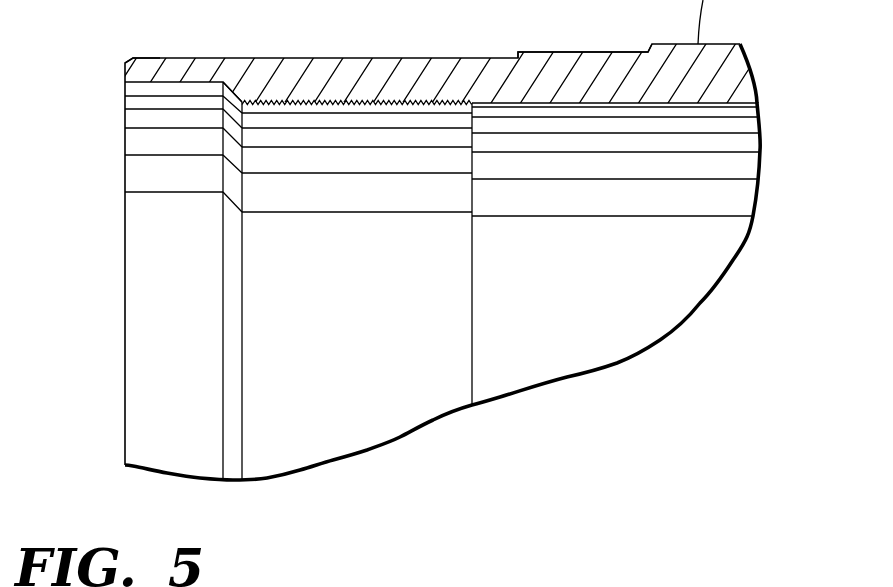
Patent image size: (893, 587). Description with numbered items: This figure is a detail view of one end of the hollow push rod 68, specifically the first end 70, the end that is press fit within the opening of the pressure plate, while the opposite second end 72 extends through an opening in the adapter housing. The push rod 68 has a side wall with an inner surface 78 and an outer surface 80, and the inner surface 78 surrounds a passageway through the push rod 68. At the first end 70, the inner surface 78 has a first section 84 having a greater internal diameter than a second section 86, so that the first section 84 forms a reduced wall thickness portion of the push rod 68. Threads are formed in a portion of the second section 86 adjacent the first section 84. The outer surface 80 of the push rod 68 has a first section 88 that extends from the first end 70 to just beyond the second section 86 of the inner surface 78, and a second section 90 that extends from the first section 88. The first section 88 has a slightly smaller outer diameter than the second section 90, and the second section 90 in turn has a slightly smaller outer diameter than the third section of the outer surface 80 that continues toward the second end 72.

The push rod 68 is at (737, 62).
The first end 70 is at (160, 58).
The second end 72 is at (632, 586).
The inner surface 78 is at (585, 107).
The outer surface 80 is at (434, 58).
The first section 84 is at (162, 83).
The second section 86 is at (398, 105).
The first section 88 is at (243, 58).
The second section 90 is at (582, 53).